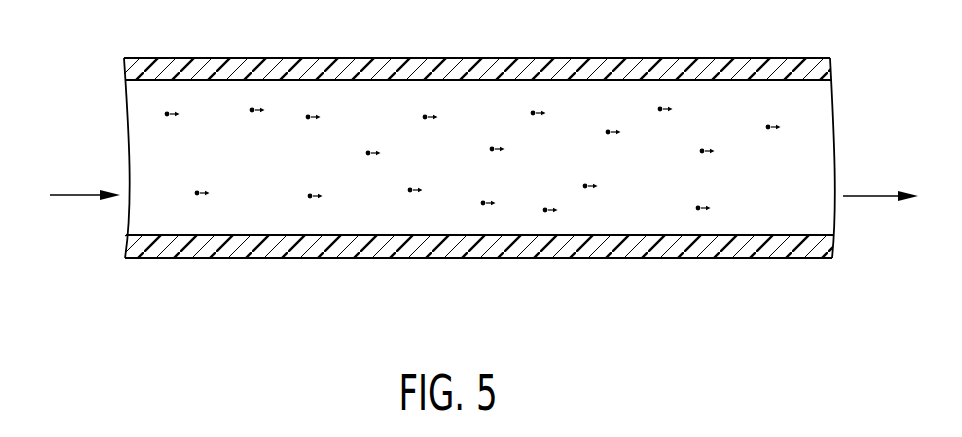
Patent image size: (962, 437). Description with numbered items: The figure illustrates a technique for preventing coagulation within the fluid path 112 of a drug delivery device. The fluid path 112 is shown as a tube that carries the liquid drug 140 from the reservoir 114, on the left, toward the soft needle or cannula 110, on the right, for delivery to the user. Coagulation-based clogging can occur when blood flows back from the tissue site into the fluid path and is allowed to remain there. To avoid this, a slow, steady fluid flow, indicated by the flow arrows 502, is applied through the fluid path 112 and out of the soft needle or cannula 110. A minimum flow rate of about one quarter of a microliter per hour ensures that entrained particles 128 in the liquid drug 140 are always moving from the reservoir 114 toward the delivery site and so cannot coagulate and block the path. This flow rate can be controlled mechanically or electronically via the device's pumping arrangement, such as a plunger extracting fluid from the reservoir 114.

The soft needle or cannula 110 is at (885, 99).
The fluid path 112 is at (552, 70).
The reservoir 114 is at (67, 99).
The entrained particles 128 is at (253, 109).
The liquid drug 140 is at (671, 187).
The flow arrows 502 is at (68, 198).